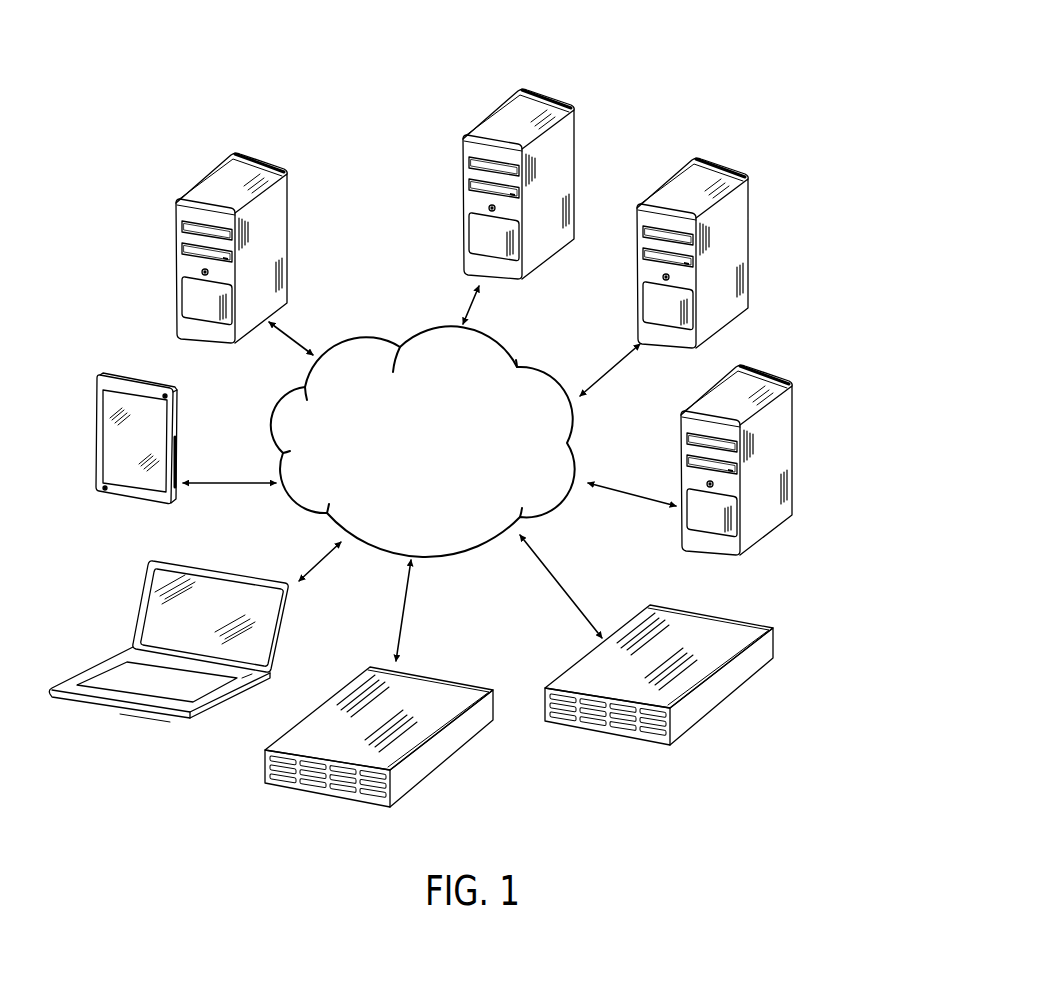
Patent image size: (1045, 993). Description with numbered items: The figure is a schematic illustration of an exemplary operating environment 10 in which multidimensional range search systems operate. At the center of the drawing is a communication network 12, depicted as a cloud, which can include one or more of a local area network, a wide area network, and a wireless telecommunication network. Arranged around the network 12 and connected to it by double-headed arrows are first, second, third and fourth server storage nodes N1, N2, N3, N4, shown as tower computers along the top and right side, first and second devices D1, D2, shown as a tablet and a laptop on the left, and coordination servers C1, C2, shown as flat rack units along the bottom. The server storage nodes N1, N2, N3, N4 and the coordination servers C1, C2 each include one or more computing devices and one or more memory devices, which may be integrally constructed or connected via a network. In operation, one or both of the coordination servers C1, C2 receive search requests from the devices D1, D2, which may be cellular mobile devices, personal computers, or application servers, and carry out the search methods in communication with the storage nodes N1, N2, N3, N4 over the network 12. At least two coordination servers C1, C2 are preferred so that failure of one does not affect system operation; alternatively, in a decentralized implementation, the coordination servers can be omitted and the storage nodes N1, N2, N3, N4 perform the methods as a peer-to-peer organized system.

The operating environment 10 is at (356, 100).
The communication network 12 is at (529, 470).
The first server storage node N1 is at (228, 166).
The second server storage node N2 is at (569, 70).
The third server storage node N3 is at (782, 147).
The fourth server storage node N4 is at (833, 403).
The first device D1 is at (143, 385).
The second device D2 is at (137, 617).
The first coordination server C1 is at (792, 678).
The second coordination server C2 is at (512, 740).